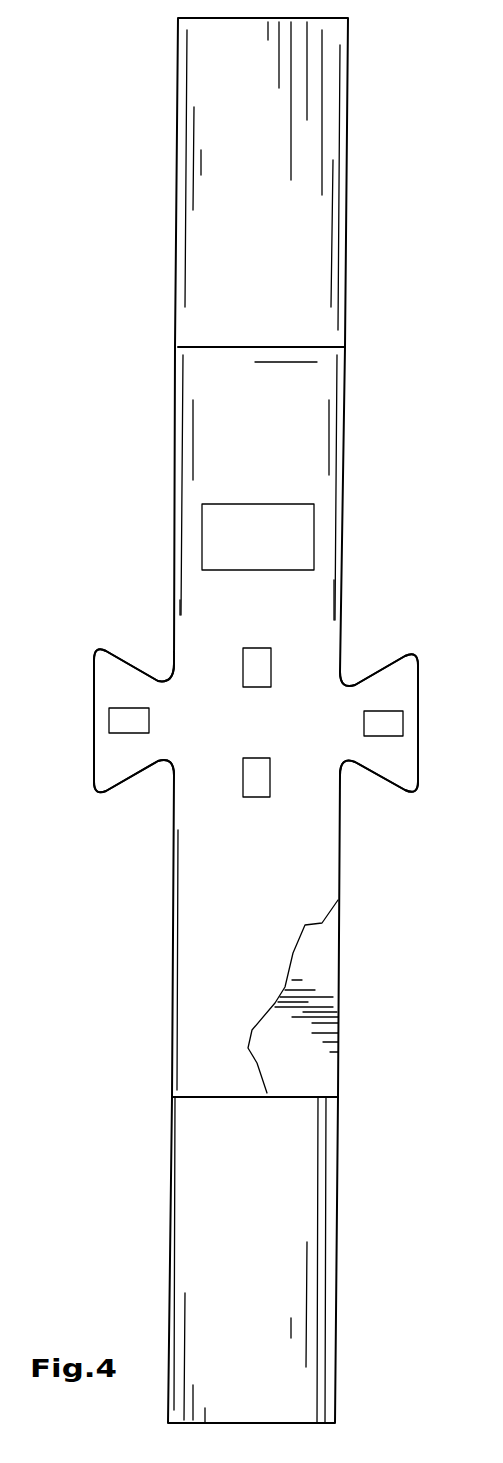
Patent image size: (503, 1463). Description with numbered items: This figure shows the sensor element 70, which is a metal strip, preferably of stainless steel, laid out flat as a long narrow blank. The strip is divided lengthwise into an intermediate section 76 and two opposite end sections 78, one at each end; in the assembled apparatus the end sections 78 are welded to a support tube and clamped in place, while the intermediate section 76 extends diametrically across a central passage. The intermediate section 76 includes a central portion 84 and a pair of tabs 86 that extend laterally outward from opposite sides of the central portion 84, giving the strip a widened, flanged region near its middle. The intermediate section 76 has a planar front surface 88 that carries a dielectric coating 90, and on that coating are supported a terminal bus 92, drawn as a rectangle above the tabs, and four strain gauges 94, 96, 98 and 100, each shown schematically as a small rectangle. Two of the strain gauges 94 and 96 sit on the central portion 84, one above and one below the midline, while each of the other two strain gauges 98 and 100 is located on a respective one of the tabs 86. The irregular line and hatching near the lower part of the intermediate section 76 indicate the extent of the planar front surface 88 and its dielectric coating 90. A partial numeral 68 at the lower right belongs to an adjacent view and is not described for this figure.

The sensor element 70 is at (392, 152).
The end sections 78 is at (347, 263).
The intermediate section 76 is at (345, 390).
The terminal bus 92 is at (314, 528).
The central portion 84 is at (307, 698).
The tabs 86 is at (108, 648).
The strain gauge 94 is at (262, 648).
The strain gauge 96 is at (262, 797).
The strain gauge 98 is at (128, 708).
The strain gauge 100 is at (380, 708).
The dielectric coating 90 is at (307, 878).
The planar front surface 88 is at (302, 1013).
The adjacent element (partial) 68 is at (502, 1293).